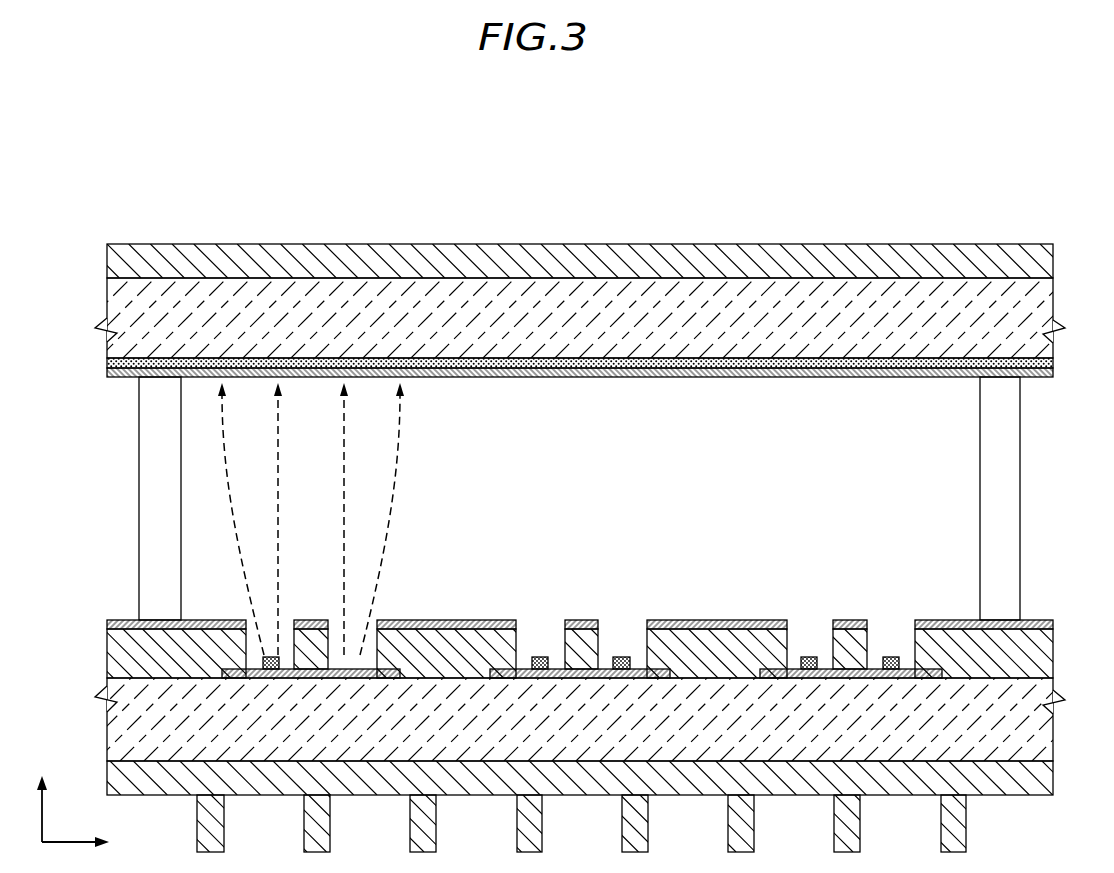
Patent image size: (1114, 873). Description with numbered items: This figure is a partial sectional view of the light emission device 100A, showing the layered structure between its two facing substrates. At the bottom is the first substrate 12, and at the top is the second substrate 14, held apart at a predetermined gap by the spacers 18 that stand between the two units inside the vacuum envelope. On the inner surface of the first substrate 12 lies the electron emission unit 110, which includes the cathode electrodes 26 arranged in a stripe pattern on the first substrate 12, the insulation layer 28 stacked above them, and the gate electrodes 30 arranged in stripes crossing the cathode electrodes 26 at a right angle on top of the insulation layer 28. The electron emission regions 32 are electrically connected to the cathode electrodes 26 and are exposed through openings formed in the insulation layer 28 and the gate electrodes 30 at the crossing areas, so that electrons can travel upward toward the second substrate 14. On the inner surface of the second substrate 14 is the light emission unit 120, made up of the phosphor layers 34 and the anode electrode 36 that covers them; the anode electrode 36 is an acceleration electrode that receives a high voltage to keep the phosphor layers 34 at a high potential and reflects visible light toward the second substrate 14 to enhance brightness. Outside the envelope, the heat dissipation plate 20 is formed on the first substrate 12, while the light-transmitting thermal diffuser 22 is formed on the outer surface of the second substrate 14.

The light emission device 100A is at (906, 229).
The first substrate 12 is at (579, 745).
The second substrate 14 is at (212, 298).
The spacers 18 is at (155, 472).
The heat dissipation plate 20 is at (1005, 783).
The thermal diffuser 22 is at (362, 262).
The cathode electrodes 26 is at (347, 672).
The insulation layer 28 is at (1040, 654).
The gate electrodes 30 is at (935, 622).
The electron emission regions 32 is at (892, 657).
The phosphor layers 34 is at (525, 358).
The anode electrode 36 is at (622, 372).
The electron emission unit 110 is at (738, 600).
The light emission unit 120 is at (801, 391).